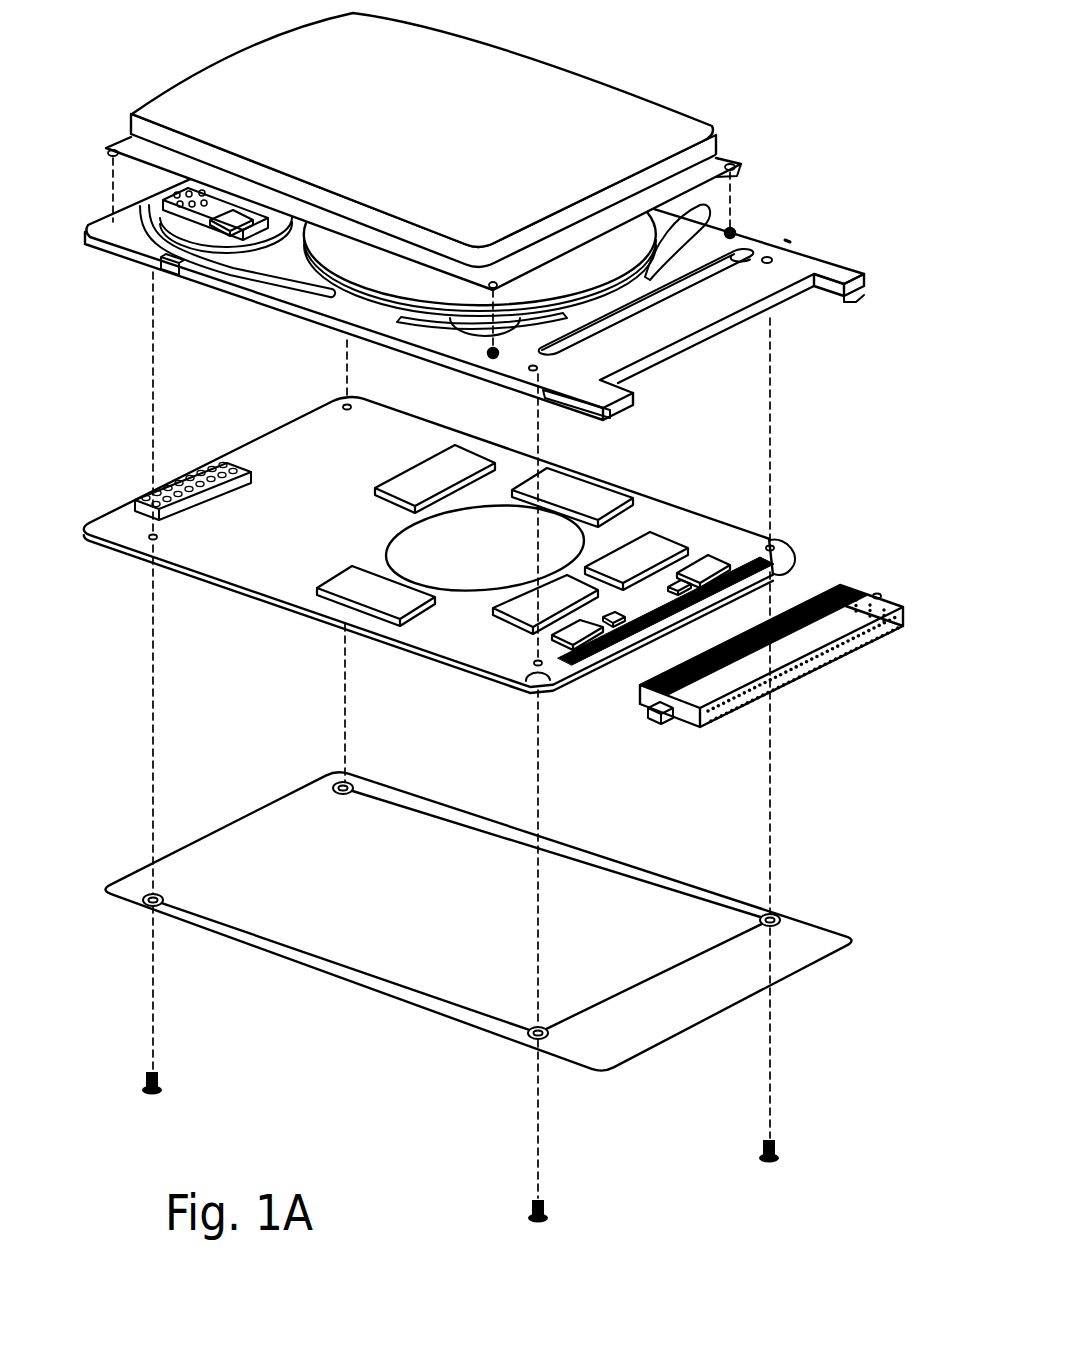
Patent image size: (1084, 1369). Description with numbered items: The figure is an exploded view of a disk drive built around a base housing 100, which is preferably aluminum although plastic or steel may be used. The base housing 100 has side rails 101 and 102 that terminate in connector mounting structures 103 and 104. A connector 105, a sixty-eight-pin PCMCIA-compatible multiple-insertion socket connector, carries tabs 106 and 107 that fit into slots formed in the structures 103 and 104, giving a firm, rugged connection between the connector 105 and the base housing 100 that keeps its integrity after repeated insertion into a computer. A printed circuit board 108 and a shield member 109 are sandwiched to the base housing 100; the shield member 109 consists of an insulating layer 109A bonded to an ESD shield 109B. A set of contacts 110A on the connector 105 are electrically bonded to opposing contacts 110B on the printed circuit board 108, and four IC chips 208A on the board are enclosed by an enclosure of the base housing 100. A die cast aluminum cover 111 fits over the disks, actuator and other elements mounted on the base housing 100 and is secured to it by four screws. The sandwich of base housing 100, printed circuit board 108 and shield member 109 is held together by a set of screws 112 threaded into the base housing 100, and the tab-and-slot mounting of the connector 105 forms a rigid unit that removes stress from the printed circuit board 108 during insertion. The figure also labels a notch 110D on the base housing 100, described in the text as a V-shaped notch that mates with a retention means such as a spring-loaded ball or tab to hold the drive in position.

The base housing 100 is at (680, 360).
The side rail 101 is at (313, 327).
The side rail 102 is at (764, 228).
The connector mounting structure 103 is at (620, 413).
The connector mounting structure 104 is at (868, 280).
The connector 105 is at (805, 678).
The tab 106 is at (648, 717).
The tab 107 is at (878, 595).
The printed circuit board 108 is at (610, 480).
The shield member 109 is at (337, 987).
The insulating layer 109A is at (437, 925).
The ESD shield 109B is at (823, 940).
The contacts 110A is at (812, 586).
The contacts 110B is at (647, 660).
The base notch 110D is at (177, 272).
The cover 111 is at (608, 88).
The screws 112 is at (773, 1147).
The IC chips 208A is at (676, 580).